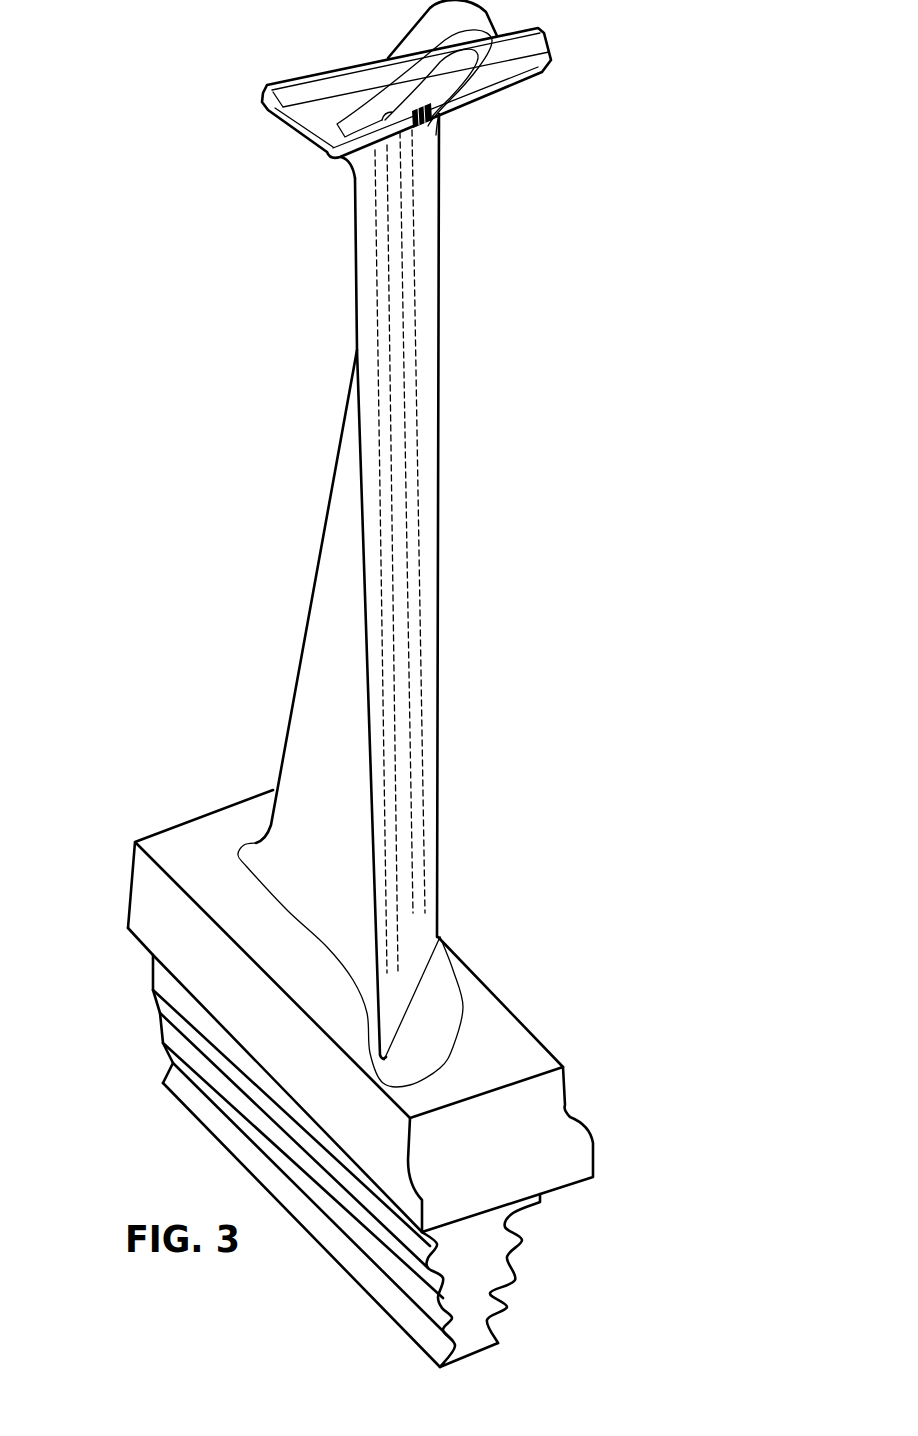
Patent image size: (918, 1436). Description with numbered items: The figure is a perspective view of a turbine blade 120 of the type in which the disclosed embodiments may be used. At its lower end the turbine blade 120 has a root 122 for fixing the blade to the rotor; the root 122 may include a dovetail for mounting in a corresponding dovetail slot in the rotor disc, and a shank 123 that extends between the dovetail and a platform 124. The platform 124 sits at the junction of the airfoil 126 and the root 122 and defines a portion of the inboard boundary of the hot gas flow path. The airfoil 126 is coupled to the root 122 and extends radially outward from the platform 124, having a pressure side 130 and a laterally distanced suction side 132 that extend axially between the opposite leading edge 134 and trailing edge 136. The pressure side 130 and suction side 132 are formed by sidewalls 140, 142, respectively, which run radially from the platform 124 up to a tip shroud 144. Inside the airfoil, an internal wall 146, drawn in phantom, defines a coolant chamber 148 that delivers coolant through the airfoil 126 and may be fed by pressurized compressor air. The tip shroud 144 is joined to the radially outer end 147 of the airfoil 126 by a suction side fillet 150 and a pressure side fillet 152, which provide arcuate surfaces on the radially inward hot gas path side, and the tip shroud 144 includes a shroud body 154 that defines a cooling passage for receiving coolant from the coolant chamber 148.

The turbine blade 120 is at (458, 313).
The root 122 is at (563, 1231).
The shank 123 is at (198, 958).
The platform 124 is at (442, 1008).
The airfoil 126 is at (460, 347).
The pressure side 130 is at (320, 685).
The suction side 132 is at (430, 457).
The leading edge 134 is at (315, 562).
The trailing edge 136 is at (373, 800).
The sidewall 140 is at (423, 392).
The sidewall 142 is at (372, 300).
The tip shroud 144 is at (544, 21).
The internal wall 146 is at (418, 617).
The radially outer end 147 is at (433, 133).
The coolant chamber 148 is at (405, 682).
The suction side fillet 150 is at (330, 124).
The pressure side fillet 152 is at (388, 133).
The shroud body 154 is at (287, 72).